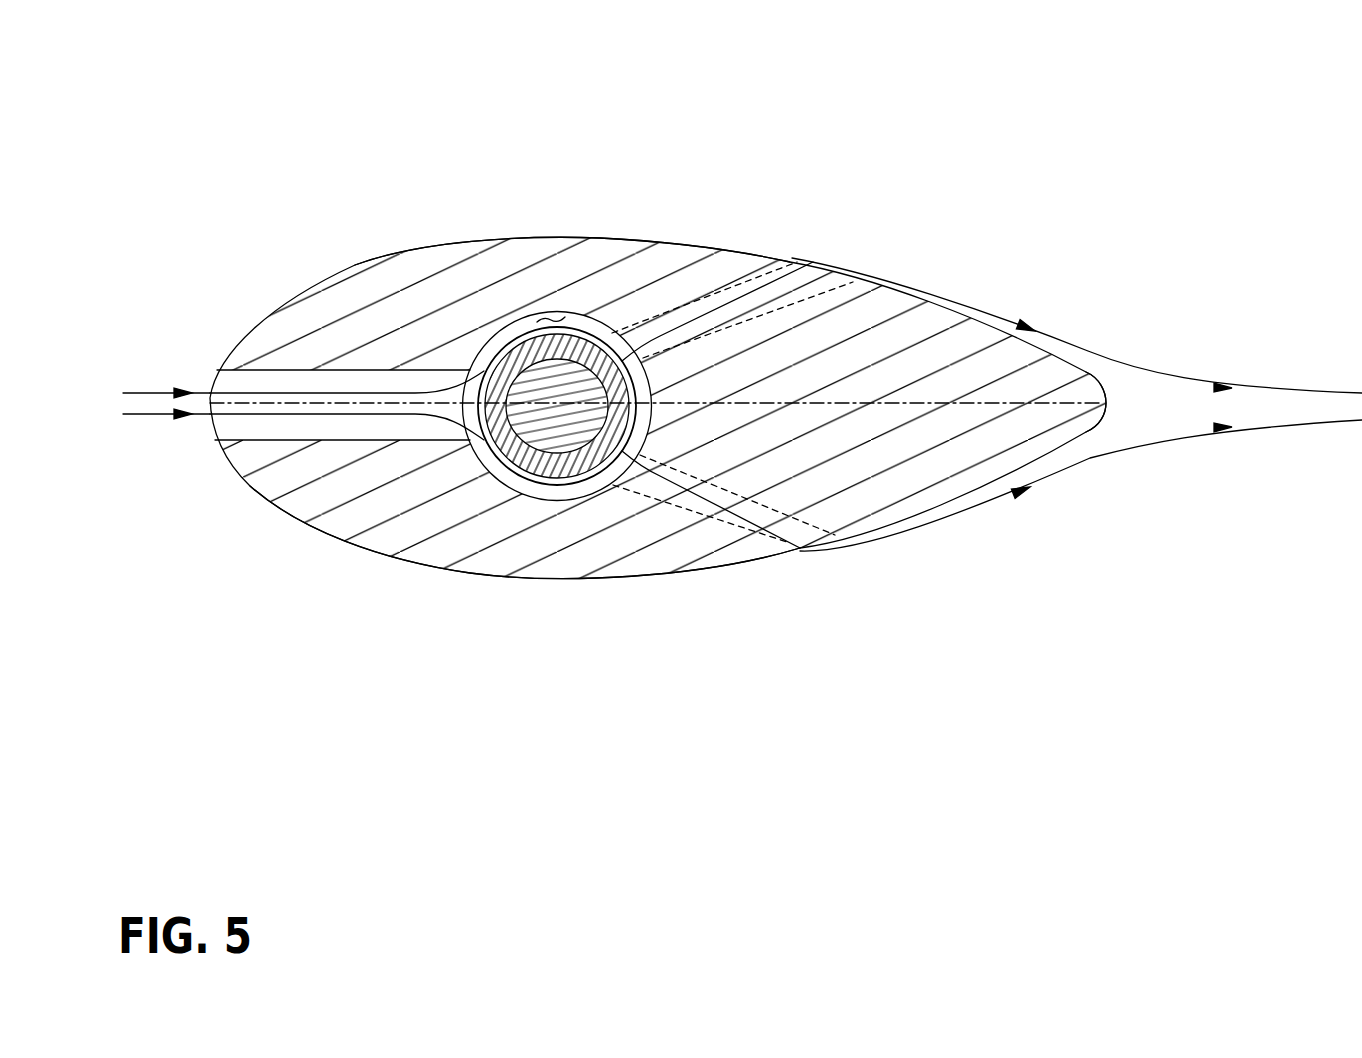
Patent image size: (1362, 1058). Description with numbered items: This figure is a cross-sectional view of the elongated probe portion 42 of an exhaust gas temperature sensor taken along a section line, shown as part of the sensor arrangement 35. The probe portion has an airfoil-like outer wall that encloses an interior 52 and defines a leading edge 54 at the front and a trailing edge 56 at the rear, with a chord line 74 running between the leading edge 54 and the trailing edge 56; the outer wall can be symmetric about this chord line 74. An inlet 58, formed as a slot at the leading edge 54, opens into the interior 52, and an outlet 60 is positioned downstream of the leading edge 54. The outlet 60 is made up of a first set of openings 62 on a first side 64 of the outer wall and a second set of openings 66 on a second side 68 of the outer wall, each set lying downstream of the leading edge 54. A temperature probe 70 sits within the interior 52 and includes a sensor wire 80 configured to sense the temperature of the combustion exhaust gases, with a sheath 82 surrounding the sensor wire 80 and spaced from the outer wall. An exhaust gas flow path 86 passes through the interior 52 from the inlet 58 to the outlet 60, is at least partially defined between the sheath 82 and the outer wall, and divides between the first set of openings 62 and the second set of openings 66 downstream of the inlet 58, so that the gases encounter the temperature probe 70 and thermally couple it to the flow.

The pipe segment assembly 35 is at (213, 160).
The elongated probe portion 42 is at (368, 260).
The interior 52 is at (551, 316).
The leading edge 54 is at (211, 390).
The trailing edge 56 is at (1104, 425).
The inlet 58 is at (212, 428).
The outlet 60 is at (778, 260).
The first set of openings 62 is at (757, 278).
The first side 64 is at (634, 240).
The second set of openings 66 is at (801, 549).
The second side 68 is at (660, 579).
The temperature probe 70 is at (557, 484).
The chord line 74 is at (986, 402).
The sensor wire 80 is at (567, 438).
The sheath 82 is at (528, 460).
The exhaust gas flow path 86 is at (143, 392).